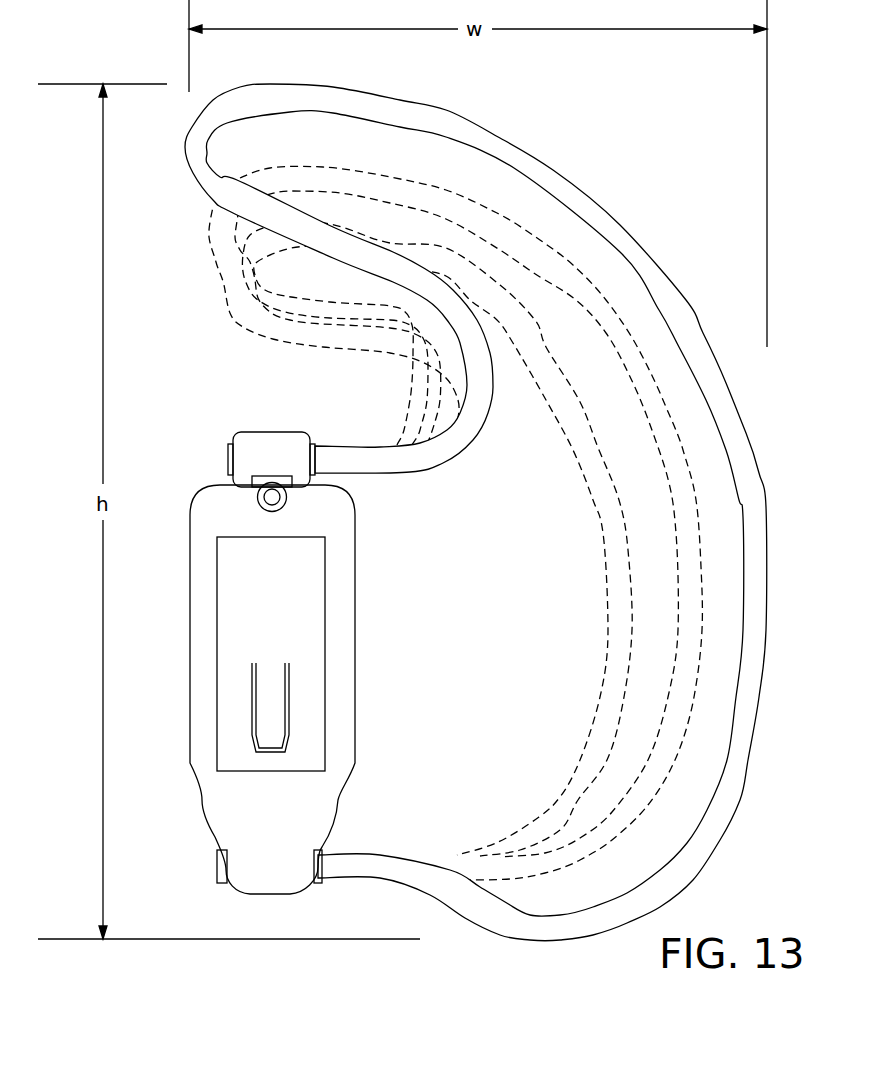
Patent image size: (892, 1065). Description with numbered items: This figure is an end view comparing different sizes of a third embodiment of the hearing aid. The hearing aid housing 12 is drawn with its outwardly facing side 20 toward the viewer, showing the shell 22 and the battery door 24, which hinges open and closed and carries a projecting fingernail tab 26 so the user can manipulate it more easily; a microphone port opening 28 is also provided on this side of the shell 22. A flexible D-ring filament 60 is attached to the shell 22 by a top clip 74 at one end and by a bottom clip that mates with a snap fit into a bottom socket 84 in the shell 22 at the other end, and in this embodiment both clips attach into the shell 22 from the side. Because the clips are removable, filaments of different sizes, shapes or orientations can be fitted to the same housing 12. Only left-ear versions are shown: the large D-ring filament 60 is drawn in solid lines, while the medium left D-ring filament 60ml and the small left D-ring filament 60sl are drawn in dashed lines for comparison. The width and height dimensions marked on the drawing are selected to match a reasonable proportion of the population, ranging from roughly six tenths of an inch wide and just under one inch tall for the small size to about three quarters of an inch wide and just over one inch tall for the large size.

The hearing aid housing 12 is at (277, 644).
The outwardly facing side 20 is at (271, 689).
The shell 22 is at (335, 610).
The battery door 24 is at (303, 640).
The projecting fingernail tab 26 is at (277, 713).
The microphone port opening 28 is at (265, 510).
The D-ring filament 60 is at (685, 298).
The medium left D-ring filament 60ml is at (524, 235).
The small left D-ring filament 60sl is at (600, 530).
The top clip 74 is at (317, 446).
The bottom socket 84 is at (320, 857).